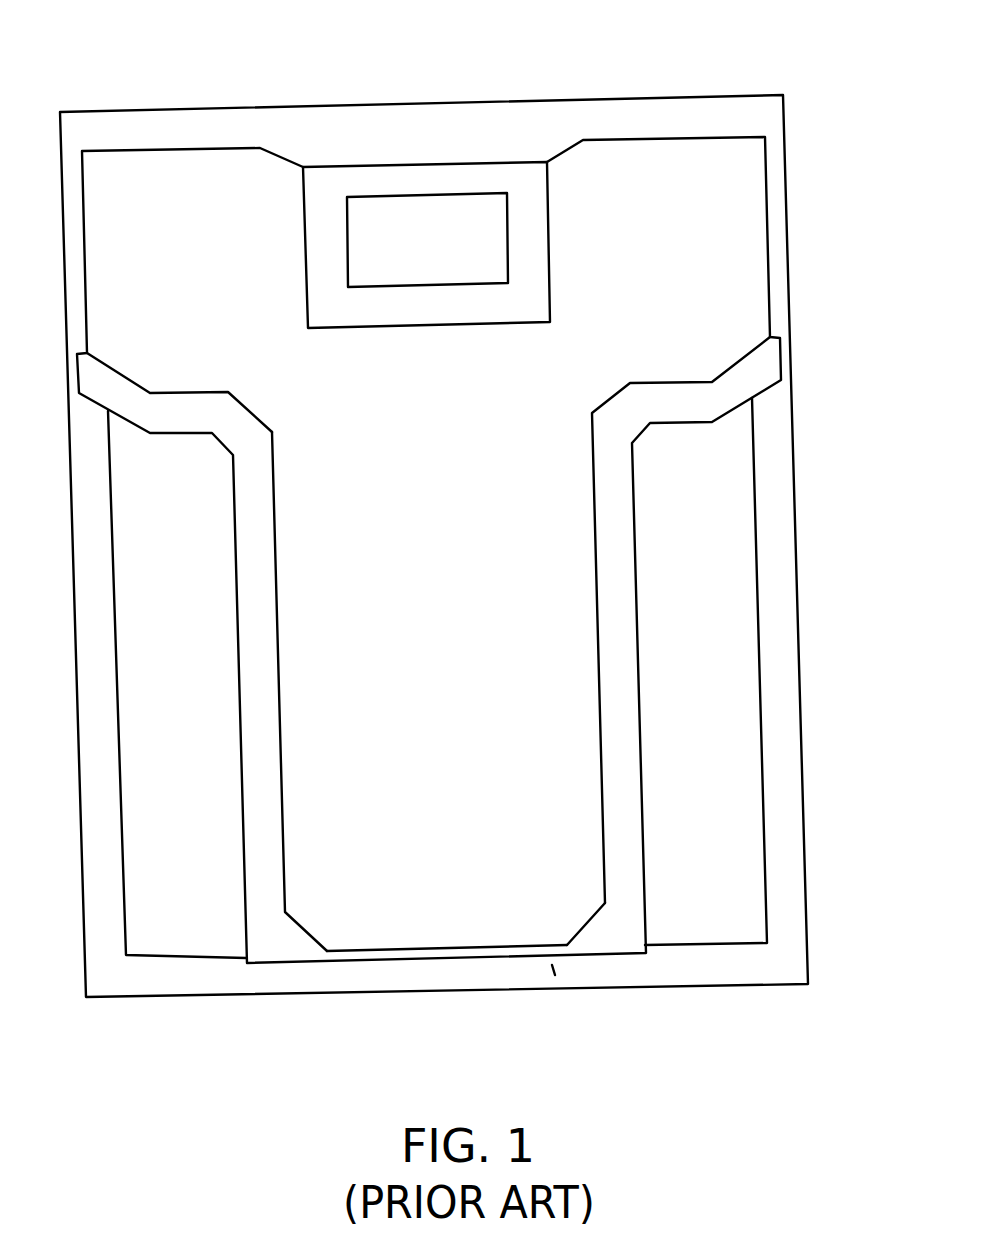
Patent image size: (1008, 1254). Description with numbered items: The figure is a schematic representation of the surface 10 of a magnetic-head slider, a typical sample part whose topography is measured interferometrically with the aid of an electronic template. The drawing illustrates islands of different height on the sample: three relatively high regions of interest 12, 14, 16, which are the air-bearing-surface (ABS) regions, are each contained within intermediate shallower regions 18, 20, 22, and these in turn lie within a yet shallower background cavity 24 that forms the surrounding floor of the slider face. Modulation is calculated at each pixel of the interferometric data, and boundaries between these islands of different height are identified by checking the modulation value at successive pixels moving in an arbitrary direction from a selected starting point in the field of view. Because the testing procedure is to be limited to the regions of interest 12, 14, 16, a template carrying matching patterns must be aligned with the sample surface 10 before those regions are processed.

The surface 10 is at (807, 102).
The region of interest 12 is at (367, 247).
The region of interest 14 is at (228, 673).
The region of interest 16 is at (748, 661).
The intermediate shallower region 18 is at (265, 903).
The intermediate shallower region 20 is at (625, 897).
The intermediate shallower region 22 is at (327, 217).
The background cavity 24 is at (510, 667).